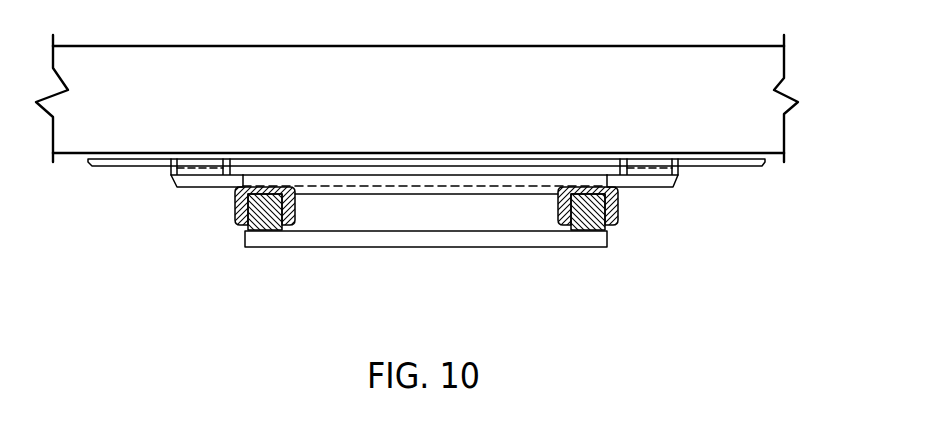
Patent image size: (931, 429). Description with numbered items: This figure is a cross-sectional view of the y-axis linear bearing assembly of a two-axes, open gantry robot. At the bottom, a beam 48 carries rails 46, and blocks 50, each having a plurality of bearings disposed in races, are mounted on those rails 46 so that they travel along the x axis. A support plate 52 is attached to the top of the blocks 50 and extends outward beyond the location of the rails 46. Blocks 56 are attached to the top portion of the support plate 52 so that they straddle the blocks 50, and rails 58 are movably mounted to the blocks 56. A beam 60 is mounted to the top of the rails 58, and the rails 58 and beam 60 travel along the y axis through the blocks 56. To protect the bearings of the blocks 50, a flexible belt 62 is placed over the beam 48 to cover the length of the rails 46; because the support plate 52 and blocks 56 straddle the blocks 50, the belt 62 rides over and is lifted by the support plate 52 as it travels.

The beam 60 is at (428, 110).
The rails 58 is at (135, 163).
The blocks 56 is at (192, 170).
The support plate 52 is at (635, 182).
The flexible belt 62 is at (423, 187).
The blocks 50 is at (238, 215).
The rails 46 is at (262, 228).
The beam 48 is at (505, 247).